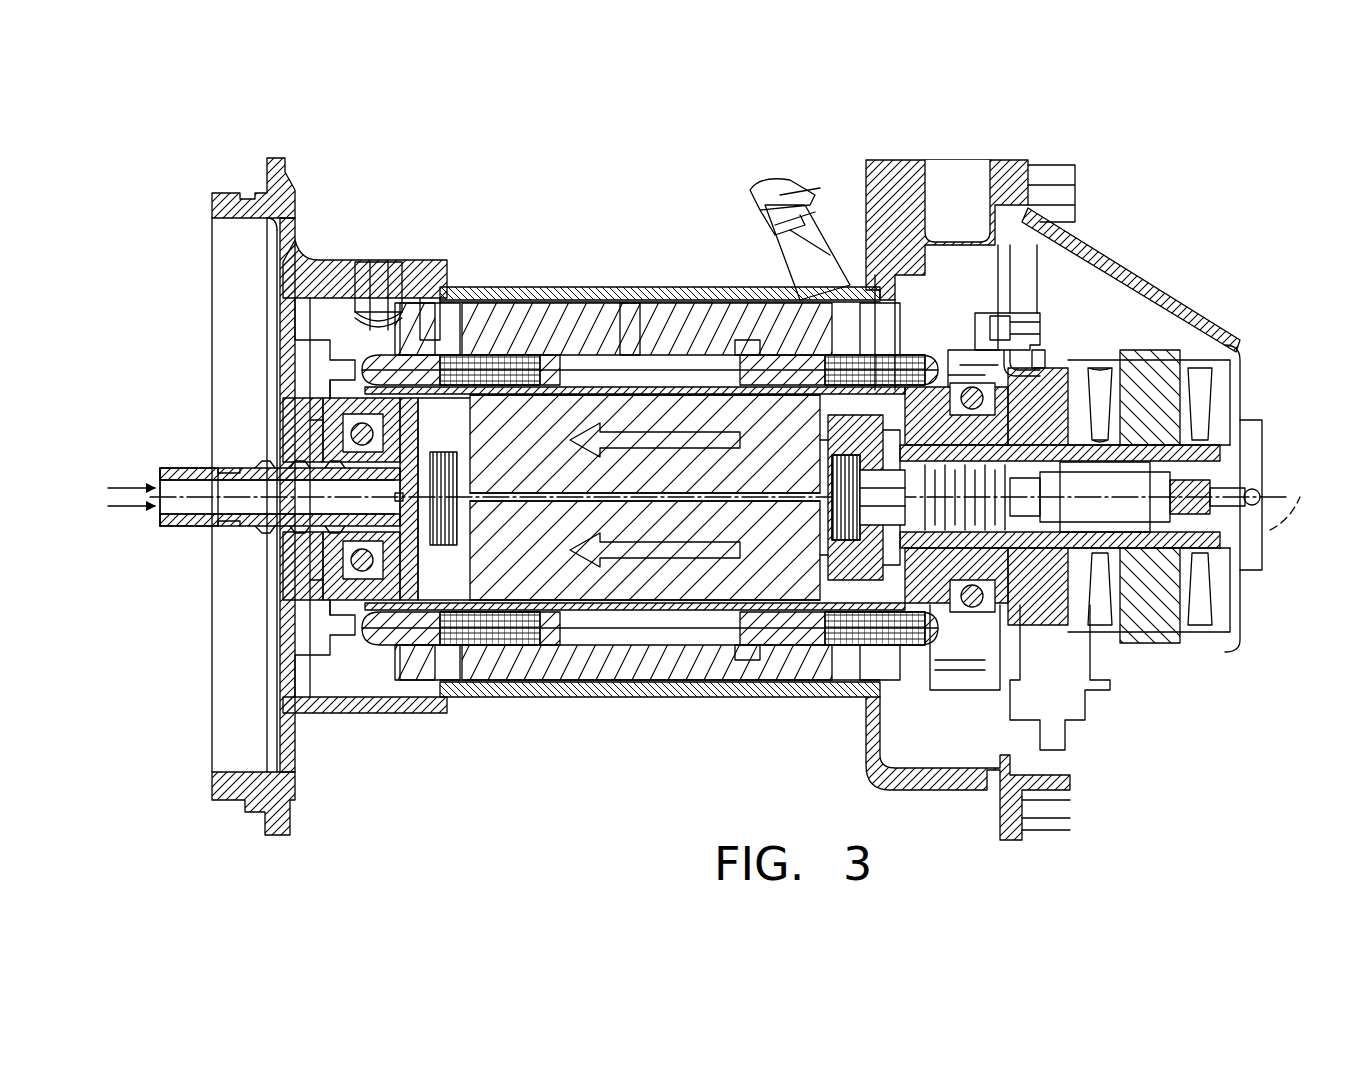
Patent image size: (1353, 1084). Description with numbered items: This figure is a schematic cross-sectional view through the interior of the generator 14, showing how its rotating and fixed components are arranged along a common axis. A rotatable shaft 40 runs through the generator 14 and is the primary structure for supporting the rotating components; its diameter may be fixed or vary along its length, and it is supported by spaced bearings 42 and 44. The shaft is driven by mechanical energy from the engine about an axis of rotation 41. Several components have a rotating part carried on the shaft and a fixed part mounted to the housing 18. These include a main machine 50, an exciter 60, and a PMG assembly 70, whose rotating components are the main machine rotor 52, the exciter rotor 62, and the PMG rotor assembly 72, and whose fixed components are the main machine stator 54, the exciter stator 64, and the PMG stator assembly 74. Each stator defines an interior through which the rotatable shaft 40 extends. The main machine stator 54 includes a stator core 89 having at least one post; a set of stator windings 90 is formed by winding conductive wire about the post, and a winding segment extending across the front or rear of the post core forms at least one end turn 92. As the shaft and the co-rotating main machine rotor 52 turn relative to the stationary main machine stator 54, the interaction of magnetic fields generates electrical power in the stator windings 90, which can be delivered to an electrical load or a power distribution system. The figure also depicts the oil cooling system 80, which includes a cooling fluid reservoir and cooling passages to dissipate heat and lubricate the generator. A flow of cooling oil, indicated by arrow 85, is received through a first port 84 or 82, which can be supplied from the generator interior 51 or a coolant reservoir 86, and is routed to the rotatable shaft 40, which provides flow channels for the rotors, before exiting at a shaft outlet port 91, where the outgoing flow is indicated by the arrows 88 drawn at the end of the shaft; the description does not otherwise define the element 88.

The generator 14 is at (478, 163).
The housing 18 is at (497, 287).
The rotatable shaft 40 is at (240, 534).
The axis of rotation 41 is at (1280, 519).
The bearing 42 is at (355, 563).
The bearing 44 is at (960, 640).
The main machine 50 is at (580, 228).
The generator interior 51 is at (430, 345).
The main machine rotor 52 is at (505, 585).
The main machine stator 54 is at (540, 605).
The exciter 60 is at (1150, 348).
The exciter rotor 62 is at (1085, 569).
The exciter stator 64 is at (1165, 625).
The PMG assembly 70 is at (1068, 368).
The PMG rotor assembly 72 is at (975, 580).
The PMG stator assembly 74 is at (1040, 610).
The cooling system 80 is at (427, 318).
The first port 82 is at (385, 279).
The first port 84 is at (752, 199).
The flow of cooling oil 85 is at (615, 560).
The coolant reservoir 86 is at (895, 715).
The fluid flow direction 88 is at (150, 488).
The stator core 89 is at (628, 318).
The stator windings 90 is at (750, 355).
The shaft outlet port 91 is at (160, 468).
The end turn 92 is at (860, 318).